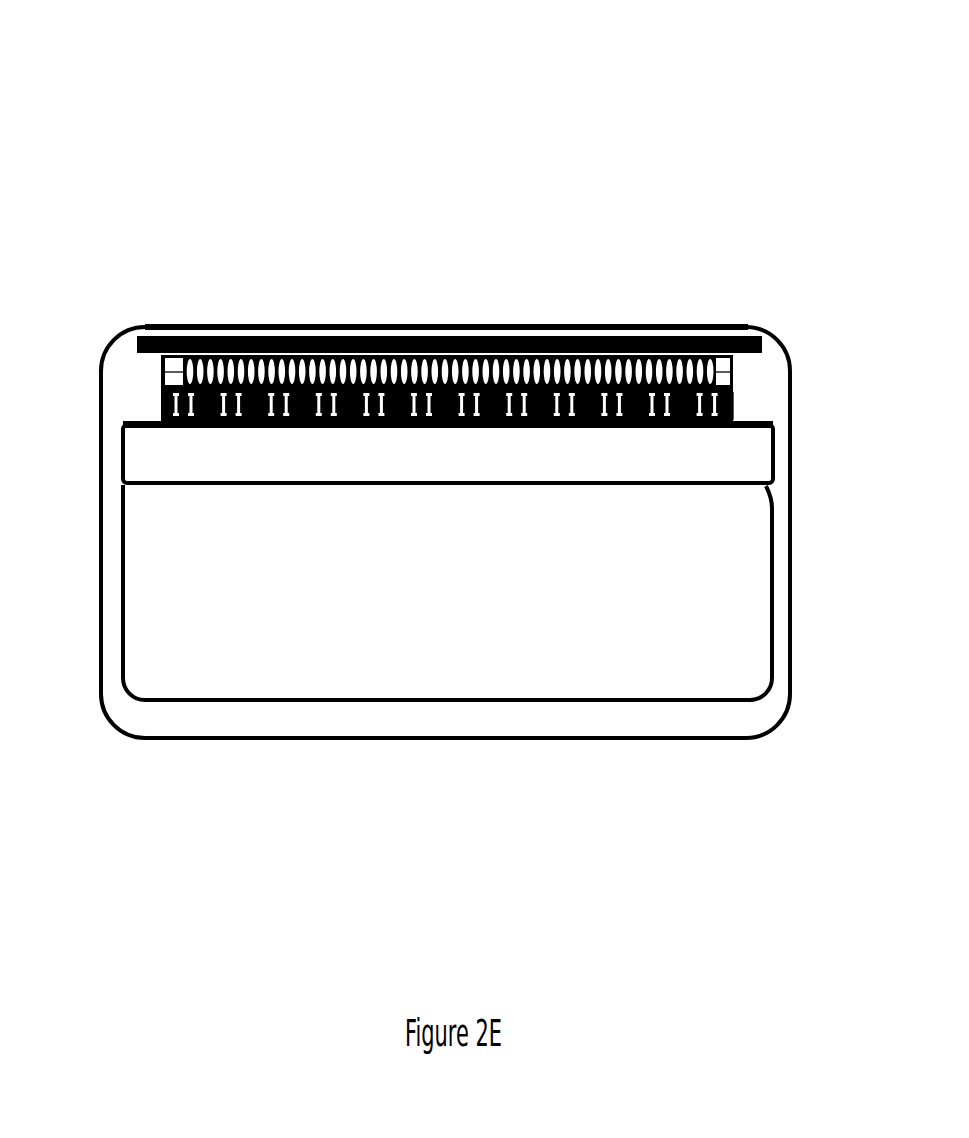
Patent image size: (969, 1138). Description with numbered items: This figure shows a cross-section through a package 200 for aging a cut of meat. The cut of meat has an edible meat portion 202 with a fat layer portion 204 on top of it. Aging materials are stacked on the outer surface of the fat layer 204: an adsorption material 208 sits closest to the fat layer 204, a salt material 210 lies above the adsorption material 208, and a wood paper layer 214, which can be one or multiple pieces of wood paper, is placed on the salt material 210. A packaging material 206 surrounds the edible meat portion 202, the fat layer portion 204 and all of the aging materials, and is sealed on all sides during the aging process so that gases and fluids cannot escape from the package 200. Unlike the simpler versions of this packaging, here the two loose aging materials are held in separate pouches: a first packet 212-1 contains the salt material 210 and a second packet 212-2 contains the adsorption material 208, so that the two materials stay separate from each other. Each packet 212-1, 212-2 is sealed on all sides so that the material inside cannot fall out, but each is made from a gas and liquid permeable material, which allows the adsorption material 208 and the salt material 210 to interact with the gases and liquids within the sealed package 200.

The package 200 is at (161, 162).
The edible meat portion 202 is at (122, 620).
The fat layer portion 204 is at (122, 452).
The packaging material 206 is at (132, 321).
The adsorption material 208 is at (162, 407).
The salt material 210 is at (137, 345).
The first packet 212-1 is at (733, 370).
The second packet 212-2 is at (733, 407).
The wood paper layer 214 is at (162, 371).